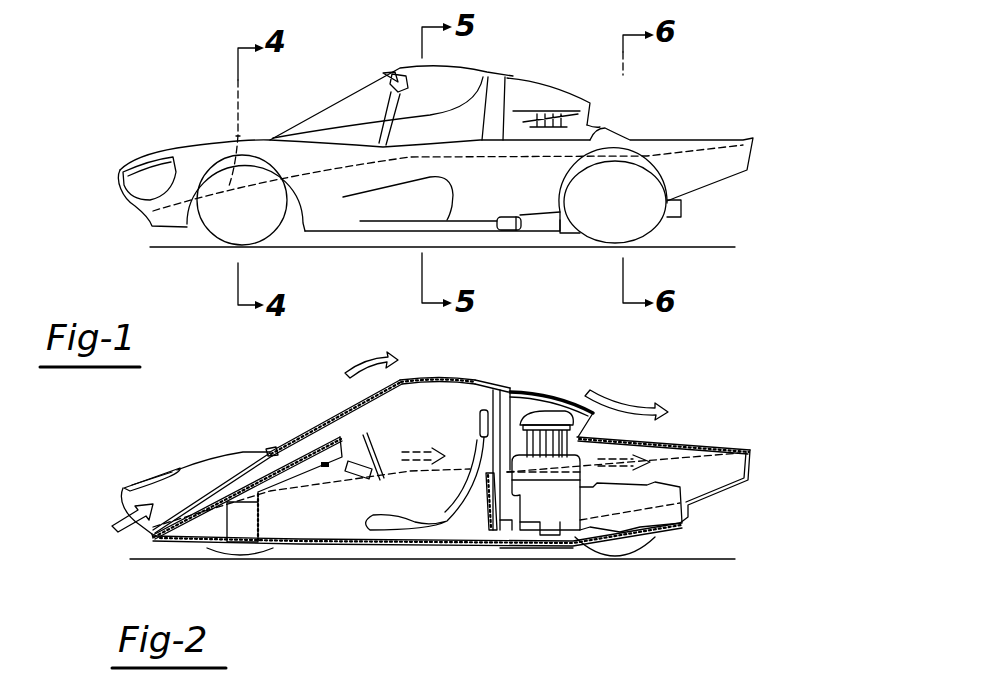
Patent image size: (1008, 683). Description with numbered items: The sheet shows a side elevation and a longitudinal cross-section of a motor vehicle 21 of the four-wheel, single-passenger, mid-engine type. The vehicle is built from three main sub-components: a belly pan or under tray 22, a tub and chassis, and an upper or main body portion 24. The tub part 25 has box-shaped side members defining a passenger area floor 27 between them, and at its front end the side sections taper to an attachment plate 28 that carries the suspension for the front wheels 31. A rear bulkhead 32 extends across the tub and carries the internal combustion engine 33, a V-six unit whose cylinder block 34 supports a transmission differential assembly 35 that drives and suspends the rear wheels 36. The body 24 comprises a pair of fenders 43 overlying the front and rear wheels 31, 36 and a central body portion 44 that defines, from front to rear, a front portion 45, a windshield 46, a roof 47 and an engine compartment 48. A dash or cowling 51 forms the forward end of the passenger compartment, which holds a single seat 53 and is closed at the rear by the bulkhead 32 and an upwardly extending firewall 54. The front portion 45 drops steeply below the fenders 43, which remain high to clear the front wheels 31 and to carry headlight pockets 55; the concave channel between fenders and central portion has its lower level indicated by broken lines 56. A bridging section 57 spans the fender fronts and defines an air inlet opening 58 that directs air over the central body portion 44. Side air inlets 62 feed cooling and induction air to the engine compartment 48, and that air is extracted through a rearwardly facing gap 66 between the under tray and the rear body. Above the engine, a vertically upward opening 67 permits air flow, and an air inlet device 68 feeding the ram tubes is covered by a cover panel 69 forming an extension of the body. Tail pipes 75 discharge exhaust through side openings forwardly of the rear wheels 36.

In FIG. 1, the motor vehicle 21 is at (175, 143).
In FIG. 2, the motor vehicle 21 is at (203, 447).
In FIG. 2, the belly pan or under tray 22 is at (534, 548).
In FIG. 1, the upper or main body portion 24 is at (484, 70).
In FIG. 2, the upper or main body portion 24 is at (476, 374).
In FIG. 2, the tub part 25 is at (510, 527).
In FIG. 2, the passenger area floor 27 is at (335, 530).
In FIG. 2, the attachment plate 28 is at (264, 528).
In FIG. 1, the front wheels 31 is at (223, 237).
In FIG. 2, the front wheels 31 is at (218, 550).
In FIG. 2, the rear bulkhead 32 is at (490, 522).
In FIG. 2, the internal combustion engine 33 is at (583, 456).
In FIG. 2, the cylinder block 34 is at (565, 514).
In FIG. 2, the transmission differential assembly 35 is at (670, 512).
In FIG. 1, the rear wheels 36 is at (661, 236).
In FIG. 2, the rear wheels 36 is at (654, 554).
In FIG. 1, the fenders 43 is at (337, 228).
In FIG. 2, the central body portion 44 is at (404, 374).
In FIG. 2, the front portion 45 is at (207, 483).
In FIG. 1, the windshield 46 is at (296, 122).
In FIG. 2, the windshield 46 is at (307, 427).
In FIG. 2, the roof 47 is at (440, 380).
In FIG. 1, the engine compartment 48 is at (589, 120).
In FIG. 2, the engine compartment 48 is at (528, 405).
In FIG. 2, the dash or cowling 51 is at (271, 448).
In FIG. 2, the seat 53 is at (448, 512).
In FIG. 2, the bulkhead or firewall 54 is at (508, 418).
In FIG. 1, the headlight pockets 55 is at (141, 188).
In FIG. 1, the broken lines 56 is at (253, 119).
In FIG. 2, the bridging section 57 is at (124, 482).
In FIG. 2, the air inlet opening 58 is at (144, 556).
In FIG. 1, the side air inlets 62 is at (444, 219).
In FIG. 2, the gap 66 is at (747, 483).
In FIG. 1, the vertically upwardly opening 67 is at (605, 128).
In FIG. 2, the vertically upwardly opening 67 is at (602, 432).
In FIG. 2, the air inlet device 68 is at (548, 408).
In FIG. 1, the cover panel 69 is at (558, 97).
In FIG. 2, the cover panel 69 is at (592, 430).
In FIG. 1, the tail pipes 75 is at (511, 216).